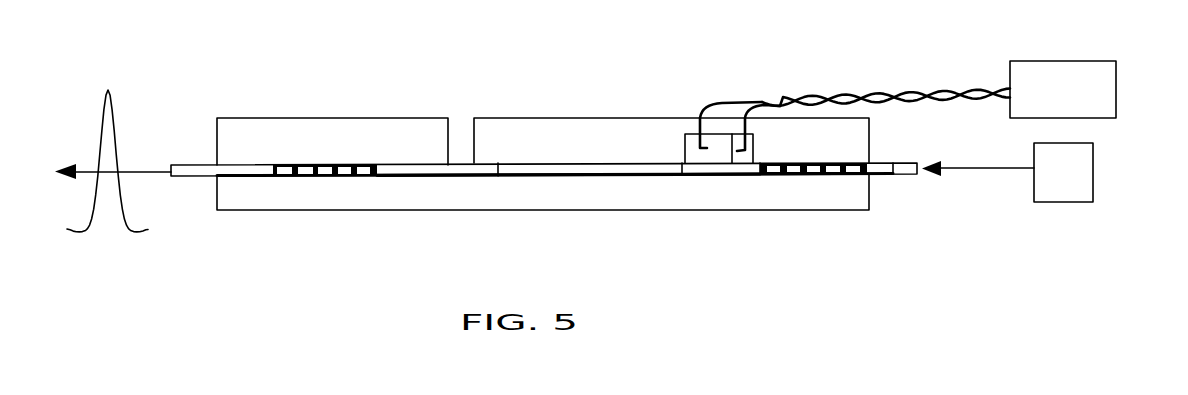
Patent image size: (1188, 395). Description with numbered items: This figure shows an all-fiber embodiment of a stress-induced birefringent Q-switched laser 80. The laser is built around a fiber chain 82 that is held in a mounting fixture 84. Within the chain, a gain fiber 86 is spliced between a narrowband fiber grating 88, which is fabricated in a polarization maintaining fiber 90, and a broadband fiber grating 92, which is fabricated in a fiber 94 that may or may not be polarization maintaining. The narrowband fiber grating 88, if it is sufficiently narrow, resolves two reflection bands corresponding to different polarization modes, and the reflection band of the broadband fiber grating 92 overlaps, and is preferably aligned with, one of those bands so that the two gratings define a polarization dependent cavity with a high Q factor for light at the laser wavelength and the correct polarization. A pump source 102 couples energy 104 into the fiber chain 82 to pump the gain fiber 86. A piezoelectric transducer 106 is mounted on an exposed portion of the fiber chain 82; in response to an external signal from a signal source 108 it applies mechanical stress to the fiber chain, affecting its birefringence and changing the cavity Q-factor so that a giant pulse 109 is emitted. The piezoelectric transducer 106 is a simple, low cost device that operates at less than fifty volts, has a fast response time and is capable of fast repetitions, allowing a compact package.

The all-fiber Q-switched laser 80 is at (345, 68).
The fiber chain 82 is at (893, 176).
The mounting fixture 84 is at (562, 133).
The gain fiber 86 is at (597, 187).
The narrowband fiber grating 88 is at (268, 187).
The polarization maintaining fiber 90 is at (420, 168).
The broadband fiber grating 92 is at (794, 185).
The fiber 94 is at (737, 167).
The pump source 102 is at (1093, 167).
The energy 104 is at (987, 170).
The piezoelectric transducer 106 is at (708, 186).
The signal source 108 is at (1058, 61).
The giant pulse 109 is at (102, 122).